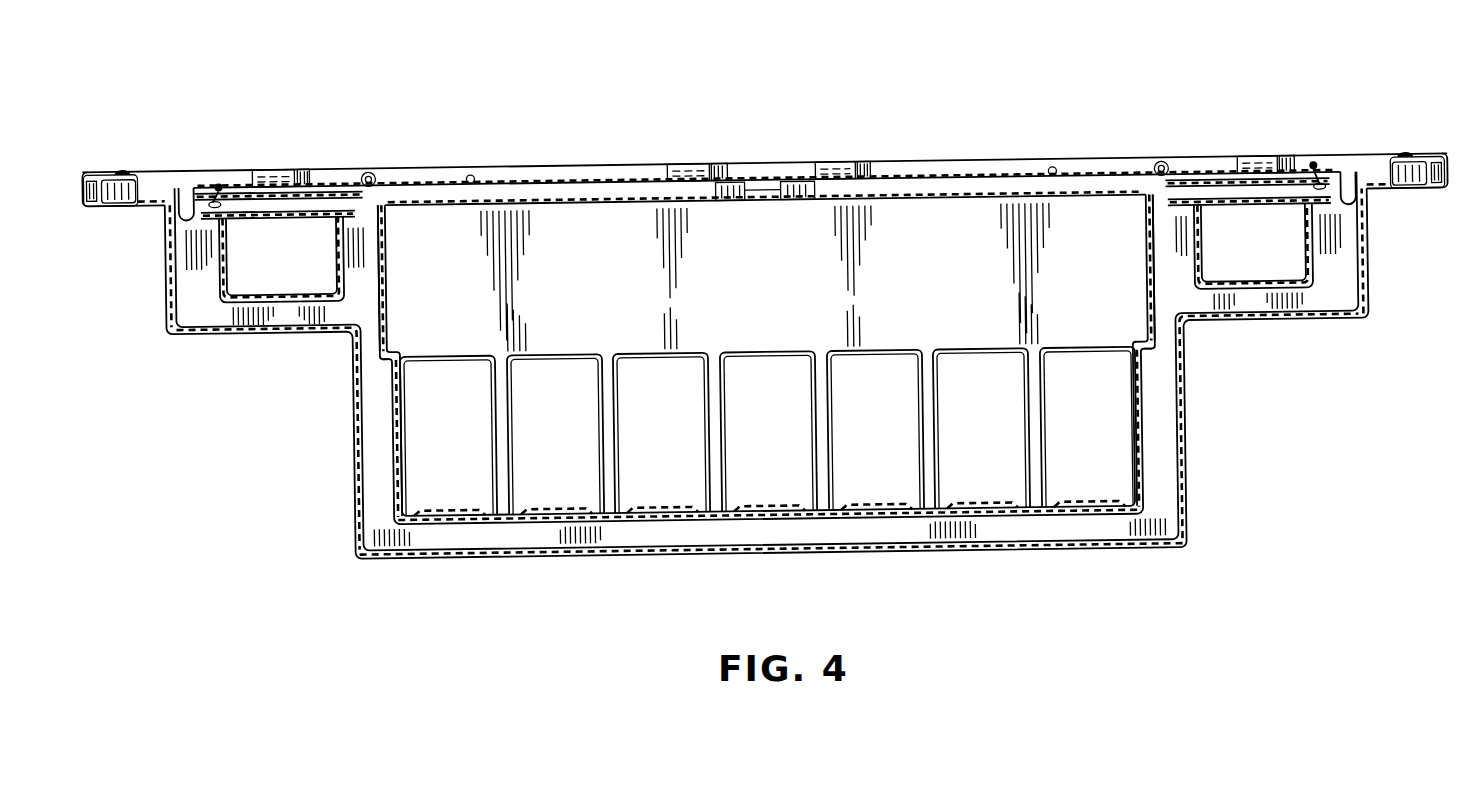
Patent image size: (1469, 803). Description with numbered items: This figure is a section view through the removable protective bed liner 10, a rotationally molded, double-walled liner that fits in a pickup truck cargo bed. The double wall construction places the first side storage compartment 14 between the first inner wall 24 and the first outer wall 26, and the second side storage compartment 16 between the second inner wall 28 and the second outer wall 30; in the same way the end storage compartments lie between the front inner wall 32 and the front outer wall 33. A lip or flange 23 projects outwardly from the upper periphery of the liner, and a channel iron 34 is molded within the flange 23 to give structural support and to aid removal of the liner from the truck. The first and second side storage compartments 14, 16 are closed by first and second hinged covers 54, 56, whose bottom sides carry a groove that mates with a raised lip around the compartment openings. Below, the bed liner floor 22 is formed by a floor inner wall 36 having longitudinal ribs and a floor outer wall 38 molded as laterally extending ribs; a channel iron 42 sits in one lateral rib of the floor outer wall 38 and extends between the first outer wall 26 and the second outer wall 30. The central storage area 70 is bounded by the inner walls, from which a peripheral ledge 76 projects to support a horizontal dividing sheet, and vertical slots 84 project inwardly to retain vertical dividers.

The removable protective bed liner 10 is at (760, 138).
The first side storage compartment 14 is at (306, 230).
The second side storage compartment 16 is at (1294, 217).
The bed liner floor 22 is at (1108, 480).
The flange 23 is at (144, 165).
The first inner wall 24 is at (384, 246).
The first outer wall 26 is at (170, 300).
The second inner wall 28 is at (1148, 252).
The second outer wall 30 is at (1367, 265).
The front inner wall 32 is at (768, 276).
The front outer wall 33 is at (370, 438).
The channel iron 34 is at (98, 168).
The floor inner wall 36 is at (785, 510).
The floor outer wall 38 is at (778, 552).
The channel iron 42 is at (1018, 532).
The first hinged cover 54 is at (245, 183).
The second hinged cover 56 is at (1219, 160).
The storage area 70 is at (428, 464).
The peripheral ledge 76 is at (390, 356).
The vertical slots 84 is at (718, 386).